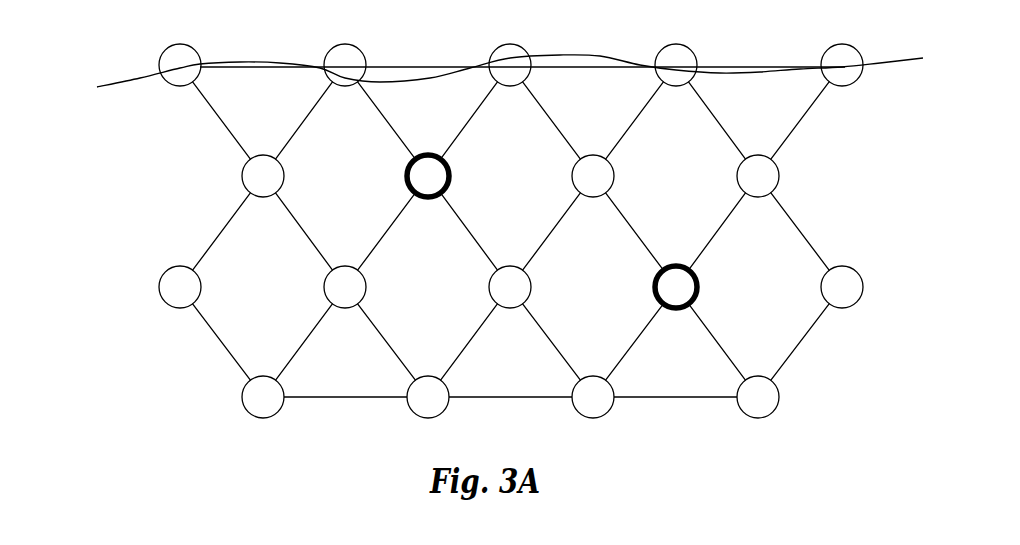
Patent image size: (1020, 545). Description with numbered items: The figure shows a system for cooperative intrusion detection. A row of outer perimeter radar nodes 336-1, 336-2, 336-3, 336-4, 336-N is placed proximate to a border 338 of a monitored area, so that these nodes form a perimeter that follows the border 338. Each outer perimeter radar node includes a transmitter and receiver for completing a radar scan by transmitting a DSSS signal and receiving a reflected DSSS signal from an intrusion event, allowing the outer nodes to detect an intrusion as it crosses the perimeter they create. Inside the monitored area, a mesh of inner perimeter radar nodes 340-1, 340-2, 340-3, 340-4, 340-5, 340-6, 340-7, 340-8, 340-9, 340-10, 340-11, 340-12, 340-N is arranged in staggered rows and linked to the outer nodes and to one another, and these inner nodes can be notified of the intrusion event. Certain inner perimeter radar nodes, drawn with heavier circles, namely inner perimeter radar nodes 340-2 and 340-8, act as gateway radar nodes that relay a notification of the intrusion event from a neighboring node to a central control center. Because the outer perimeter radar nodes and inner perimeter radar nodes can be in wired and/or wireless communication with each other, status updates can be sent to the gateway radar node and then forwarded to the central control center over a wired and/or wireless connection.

The outer perimeter radar node 336-1 is at (163, 52).
The outer perimeter radar node 336-2 is at (328, 52).
The outer perimeter radar node 336-3 is at (493, 52).
The outer perimeter radar node 336-4 is at (659, 52).
The outer perimeter radar node 336-N is at (825, 52).
The border 338 is at (118, 88).
The inner perimeter radar node 340-1 is at (245, 171).
The inner perimeter radar node 340-2 is at (410, 171).
The inner perimeter radar node 340-3 is at (575, 171).
The inner perimeter radar node 340-4 is at (740, 171).
The inner perimeter radar node 340-5 is at (162, 282).
The inner perimeter radar node 340-6 is at (327, 282).
The inner perimeter radar node 340-7 is at (492, 282).
The inner perimeter radar node 340-8 is at (658, 282).
The inner perimeter radar node 340-9 is at (824, 282).
The inner perimeter radar node 340-10 is at (245, 392).
The inner perimeter radar node 340-11 is at (410, 392).
The inner perimeter radar node 340-12 is at (575, 392).
The inner perimeter radar node 340-N is at (740, 392).